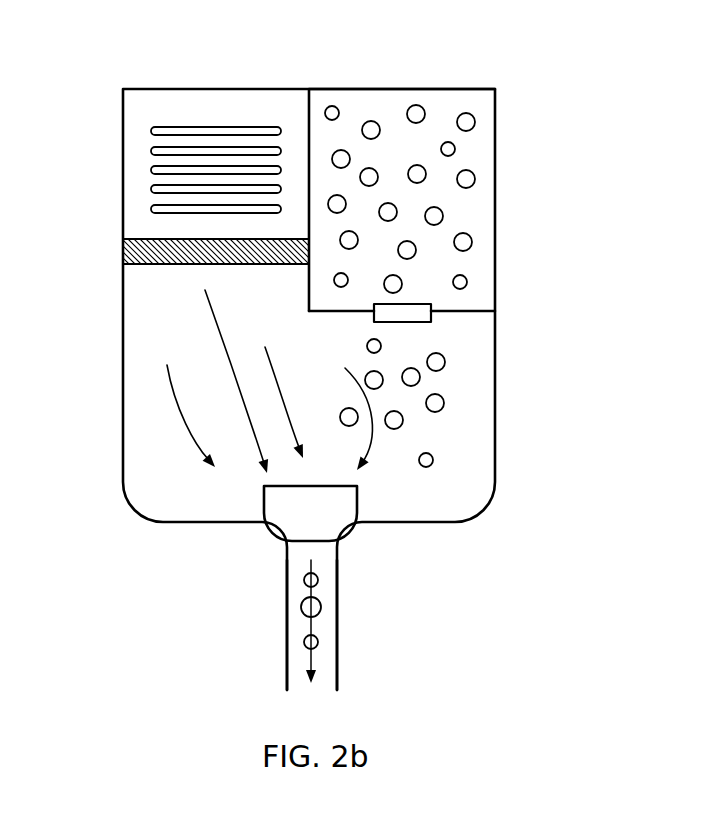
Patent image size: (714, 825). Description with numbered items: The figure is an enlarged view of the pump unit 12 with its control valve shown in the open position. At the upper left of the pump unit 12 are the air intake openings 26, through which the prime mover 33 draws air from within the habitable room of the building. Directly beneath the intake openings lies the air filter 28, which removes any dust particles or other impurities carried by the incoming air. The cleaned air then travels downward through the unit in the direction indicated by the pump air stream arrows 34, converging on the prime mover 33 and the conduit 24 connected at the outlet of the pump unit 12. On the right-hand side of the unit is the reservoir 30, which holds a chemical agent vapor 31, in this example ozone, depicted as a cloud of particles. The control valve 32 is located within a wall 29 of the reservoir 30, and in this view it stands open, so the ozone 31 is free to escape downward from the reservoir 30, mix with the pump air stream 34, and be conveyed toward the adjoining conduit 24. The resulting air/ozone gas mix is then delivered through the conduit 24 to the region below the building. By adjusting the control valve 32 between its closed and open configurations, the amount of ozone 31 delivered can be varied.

The pump unit 12 is at (540, 70).
The conduit 24 is at (338, 643).
The air intake openings 26 is at (150, 190).
The air filter 28 is at (122, 250).
The wall 29 is at (473, 311).
The reservoir 30 is at (483, 150).
The chemical agent vapor 31 is at (475, 180).
The control valve 32 is at (402, 322).
The prime mover 33 is at (343, 525).
The pump air stream arrows 34 is at (168, 398).